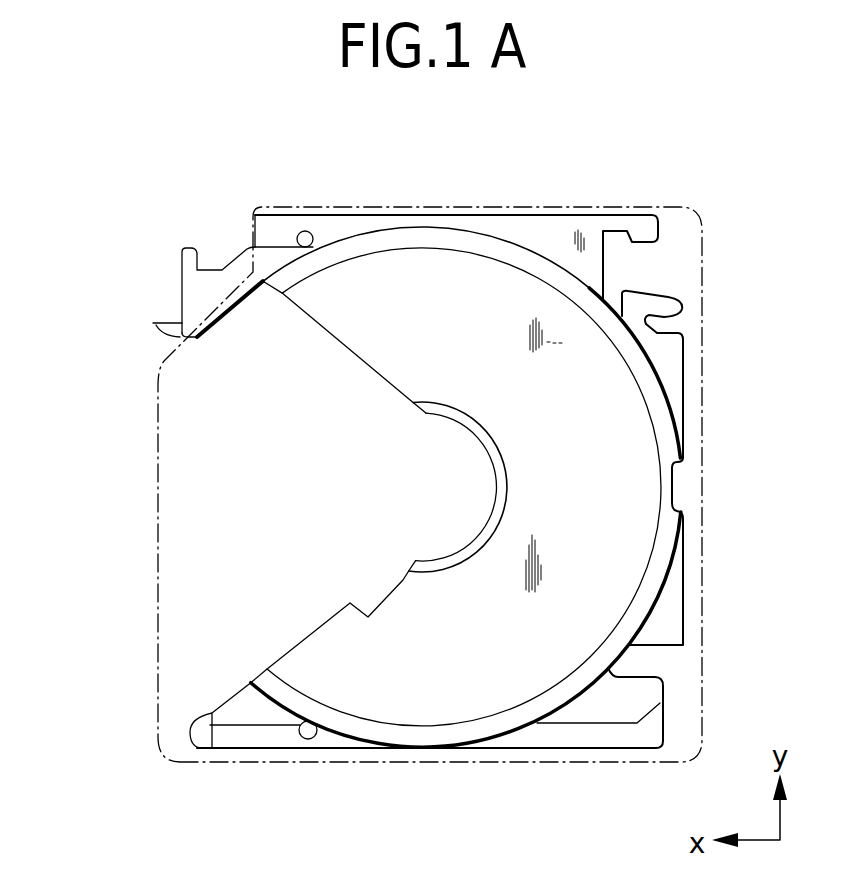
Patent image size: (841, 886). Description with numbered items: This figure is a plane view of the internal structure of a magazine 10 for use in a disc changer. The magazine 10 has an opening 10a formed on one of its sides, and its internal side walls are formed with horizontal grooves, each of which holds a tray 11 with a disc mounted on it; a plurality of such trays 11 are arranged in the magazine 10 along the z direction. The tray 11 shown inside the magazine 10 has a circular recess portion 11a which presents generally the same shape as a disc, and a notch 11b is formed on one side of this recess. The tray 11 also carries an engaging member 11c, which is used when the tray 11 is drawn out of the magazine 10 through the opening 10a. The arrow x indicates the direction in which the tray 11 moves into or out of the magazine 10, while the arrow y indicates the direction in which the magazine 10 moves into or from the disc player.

The magazine 10 is at (577, 207).
The opening 10a is at (152, 524).
The tray 11 is at (486, 332).
The circular recess portion 11a is at (640, 350).
The notch 11b is at (368, 470).
The engaging member 11c is at (205, 258).